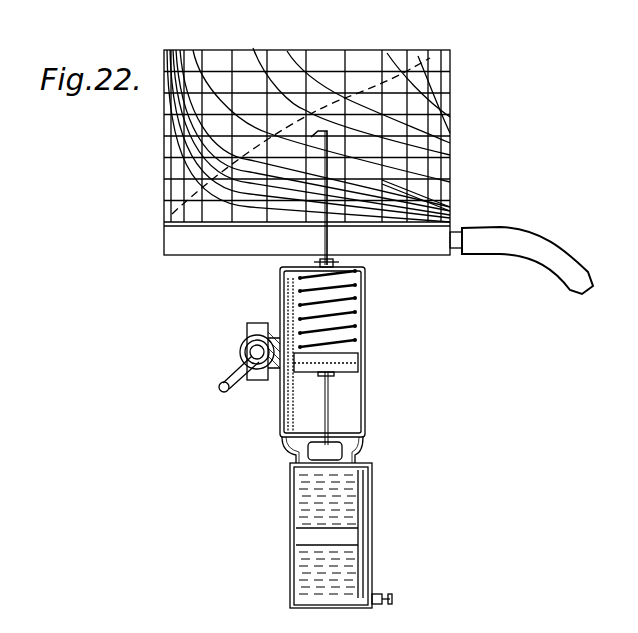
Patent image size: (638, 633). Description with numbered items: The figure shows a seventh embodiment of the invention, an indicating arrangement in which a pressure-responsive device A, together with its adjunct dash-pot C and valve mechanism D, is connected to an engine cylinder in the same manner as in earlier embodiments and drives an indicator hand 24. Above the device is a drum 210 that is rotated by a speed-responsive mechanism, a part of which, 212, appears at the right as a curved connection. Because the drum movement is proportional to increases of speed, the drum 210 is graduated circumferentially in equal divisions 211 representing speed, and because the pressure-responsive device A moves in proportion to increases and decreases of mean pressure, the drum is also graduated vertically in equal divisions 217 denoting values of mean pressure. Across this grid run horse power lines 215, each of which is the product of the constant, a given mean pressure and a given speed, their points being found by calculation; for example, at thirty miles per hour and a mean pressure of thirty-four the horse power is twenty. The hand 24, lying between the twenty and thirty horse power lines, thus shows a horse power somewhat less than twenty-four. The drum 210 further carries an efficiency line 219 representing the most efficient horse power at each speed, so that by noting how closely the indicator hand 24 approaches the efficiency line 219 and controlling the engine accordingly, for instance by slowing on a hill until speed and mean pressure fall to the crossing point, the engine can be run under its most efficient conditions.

The drum 210 is at (330, 54).
The circumferential graduations 211 is at (256, 52).
The efficiency line 219 is at (422, 62).
The horse power lines 215 is at (436, 180).
The vertical graduations 217 is at (308, 170).
The speed-responsive mechanism 212 is at (505, 240).
The indicator hand 24 is at (340, 141).
The pressure-responsive device A is at (333, 361).
The valve mechanism D is at (249, 374).
The dash-pot C is at (344, 535).